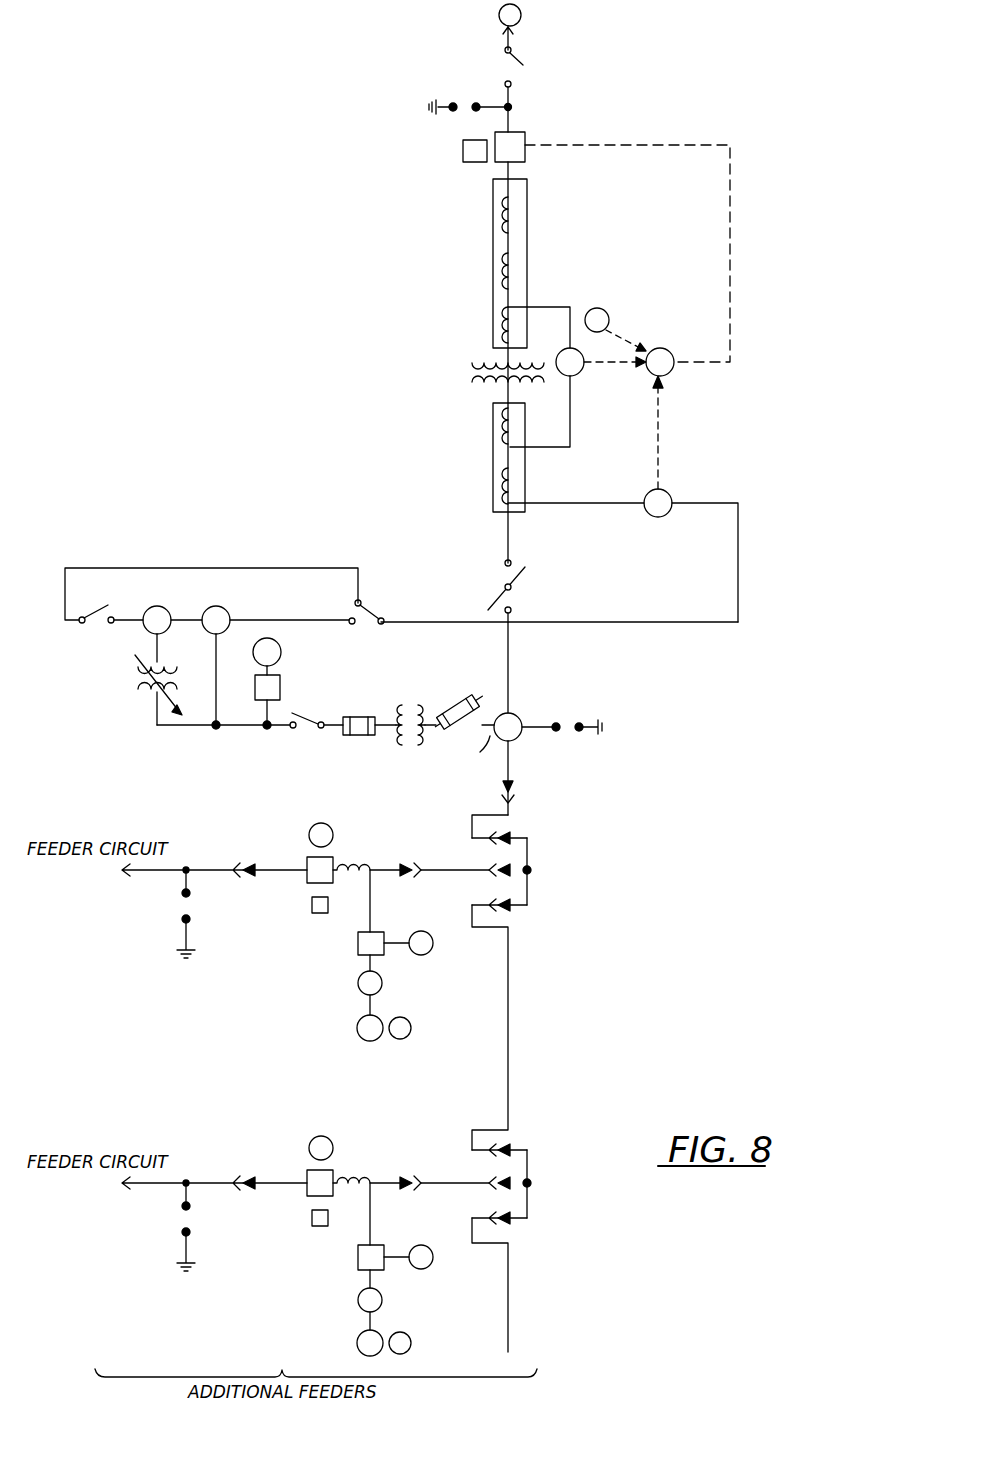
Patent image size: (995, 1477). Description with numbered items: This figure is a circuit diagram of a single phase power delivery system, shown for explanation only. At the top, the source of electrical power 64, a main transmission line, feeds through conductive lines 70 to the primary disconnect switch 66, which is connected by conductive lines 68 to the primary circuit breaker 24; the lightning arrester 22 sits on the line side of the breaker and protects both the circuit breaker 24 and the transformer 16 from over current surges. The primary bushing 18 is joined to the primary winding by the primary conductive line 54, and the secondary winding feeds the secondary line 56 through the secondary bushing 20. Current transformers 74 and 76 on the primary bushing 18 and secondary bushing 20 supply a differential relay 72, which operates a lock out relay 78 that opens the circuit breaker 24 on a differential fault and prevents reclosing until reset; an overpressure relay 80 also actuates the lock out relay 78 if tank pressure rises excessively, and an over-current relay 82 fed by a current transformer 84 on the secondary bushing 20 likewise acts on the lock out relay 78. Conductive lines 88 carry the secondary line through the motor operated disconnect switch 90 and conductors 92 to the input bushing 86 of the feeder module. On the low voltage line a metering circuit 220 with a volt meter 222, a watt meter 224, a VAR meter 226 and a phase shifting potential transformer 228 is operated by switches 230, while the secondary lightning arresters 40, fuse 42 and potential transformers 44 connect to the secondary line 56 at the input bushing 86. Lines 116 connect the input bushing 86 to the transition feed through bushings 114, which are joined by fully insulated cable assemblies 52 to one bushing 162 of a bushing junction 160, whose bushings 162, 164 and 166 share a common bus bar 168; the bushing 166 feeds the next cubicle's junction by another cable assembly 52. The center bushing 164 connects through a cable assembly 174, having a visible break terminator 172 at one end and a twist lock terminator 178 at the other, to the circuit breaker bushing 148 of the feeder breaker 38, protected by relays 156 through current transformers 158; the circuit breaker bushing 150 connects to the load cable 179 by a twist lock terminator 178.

The transformer 16 is at (472, 551).
The primary bushings 18 is at (492, 218).
The secondary bushings 20 is at (492, 483).
The primary lightning arresters 22 is at (467, 100).
The primary circuit breakers 24 is at (525, 140).
The feeder breakers 38 is at (307, 860).
The secondary lightning arresters 40 is at (573, 722).
The fuses 42 is at (350, 738).
The potential transformers 44 is at (418, 702).
The cable assemblies 52 is at (474, 816).
The primary conductive line 54 is at (505, 357).
The secondary conductive lines 56 is at (505, 390).
The source of electrical power 64 is at (523, 15).
The primary disconnect switches 66 is at (527, 68).
The conductive lines 68 is at (512, 115).
The conductive lines 70 is at (505, 41).
The differential relay 72 is at (580, 376).
The current transformer 74 is at (512, 332).
The current transformer 76 is at (512, 425).
The lock out relay 78 is at (672, 350).
The overpressure relay 80 is at (608, 312).
The over-current relay 82 is at (670, 490).
The current transformer 84 is at (512, 488).
The input bushings 86 is at (522, 716).
The conductive lines 88 is at (506, 536).
The disconnect switches 90 is at (528, 588).
The conductors 92 is at (510, 643).
The feed through bushings 114 is at (513, 789).
The lines 116 is at (512, 770).
The feed through bushing 148 is at (410, 866).
The feed through bushing 150 is at (250, 880).
The relays 156 is at (383, 983).
The current transformers 158 is at (356, 863).
The bushing junctions 160 is at (530, 886).
The bushing 162 is at (512, 838).
The center bushing 164 is at (506, 868).
The bushing 166 is at (512, 905).
The common bus bar 168 is at (530, 845).
The visible break terminator 172 is at (492, 1180).
The cable assemblies 174 is at (468, 874).
The twist-lock terminator 178 is at (237, 866).
The load cable 179 is at (223, 875).
The metering circuit 220 is at (128, 637).
The volt meter 222 is at (282, 652).
The watt meter 224 is at (228, 607).
The VAR meter 226 is at (165, 607).
The phase shifting potential transformer 228 is at (138, 682).
The switches 230 is at (375, 600).